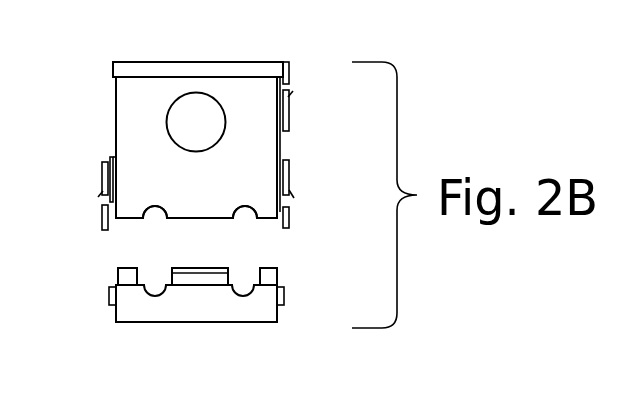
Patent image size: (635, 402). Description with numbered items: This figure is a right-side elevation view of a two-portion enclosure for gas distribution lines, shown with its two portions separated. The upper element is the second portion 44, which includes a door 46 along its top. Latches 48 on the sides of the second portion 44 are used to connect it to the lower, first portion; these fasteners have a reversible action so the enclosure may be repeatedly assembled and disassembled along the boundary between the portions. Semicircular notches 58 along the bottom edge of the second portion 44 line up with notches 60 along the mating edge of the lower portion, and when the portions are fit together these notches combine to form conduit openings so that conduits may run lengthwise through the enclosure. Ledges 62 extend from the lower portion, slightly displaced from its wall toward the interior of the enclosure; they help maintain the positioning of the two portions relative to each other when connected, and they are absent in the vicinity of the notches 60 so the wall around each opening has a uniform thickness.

The second portion 44 is at (239, 108).
The door 46 is at (229, 70).
The latches 48 is at (102, 172).
The notches 58 is at (238, 204).
The notches 60 is at (157, 300).
The ledges 62 is at (182, 275).